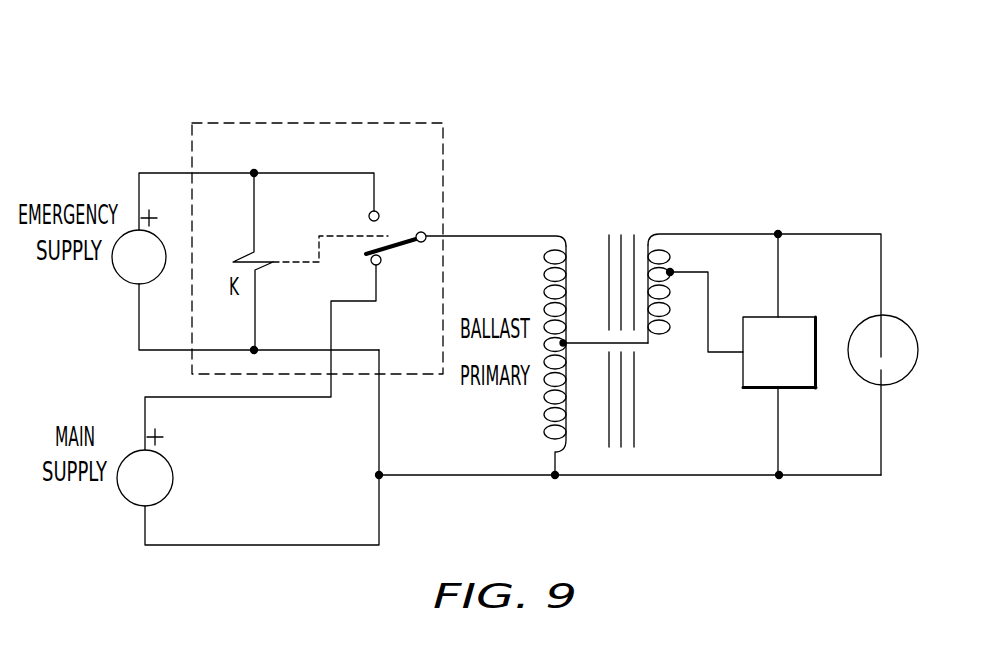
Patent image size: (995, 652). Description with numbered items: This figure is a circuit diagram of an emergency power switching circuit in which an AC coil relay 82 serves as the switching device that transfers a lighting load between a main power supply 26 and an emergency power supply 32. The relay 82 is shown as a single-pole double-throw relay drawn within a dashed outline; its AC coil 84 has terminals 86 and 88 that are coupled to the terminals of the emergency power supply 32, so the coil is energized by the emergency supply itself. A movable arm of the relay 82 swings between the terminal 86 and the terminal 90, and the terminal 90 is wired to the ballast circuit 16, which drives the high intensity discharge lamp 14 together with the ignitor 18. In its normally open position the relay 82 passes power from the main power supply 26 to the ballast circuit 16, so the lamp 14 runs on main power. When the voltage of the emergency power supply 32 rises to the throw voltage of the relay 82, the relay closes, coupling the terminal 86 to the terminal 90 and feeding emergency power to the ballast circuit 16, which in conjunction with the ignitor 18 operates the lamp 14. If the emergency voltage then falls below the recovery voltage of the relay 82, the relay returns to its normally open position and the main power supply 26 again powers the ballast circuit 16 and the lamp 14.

The AC coil relay 82 is at (452, 101).
The AC coil 84 is at (262, 257).
The terminal 86 is at (378, 212).
The terminal 88 is at (381, 264).
The terminal 90 is at (427, 231).
The emergency power supply 32 is at (152, 278).
The main power supply 26 is at (130, 500).
The ballast circuit 16 is at (583, 446).
The ignitor 18 is at (755, 384).
The high intensity discharge lamp 14 is at (872, 318).